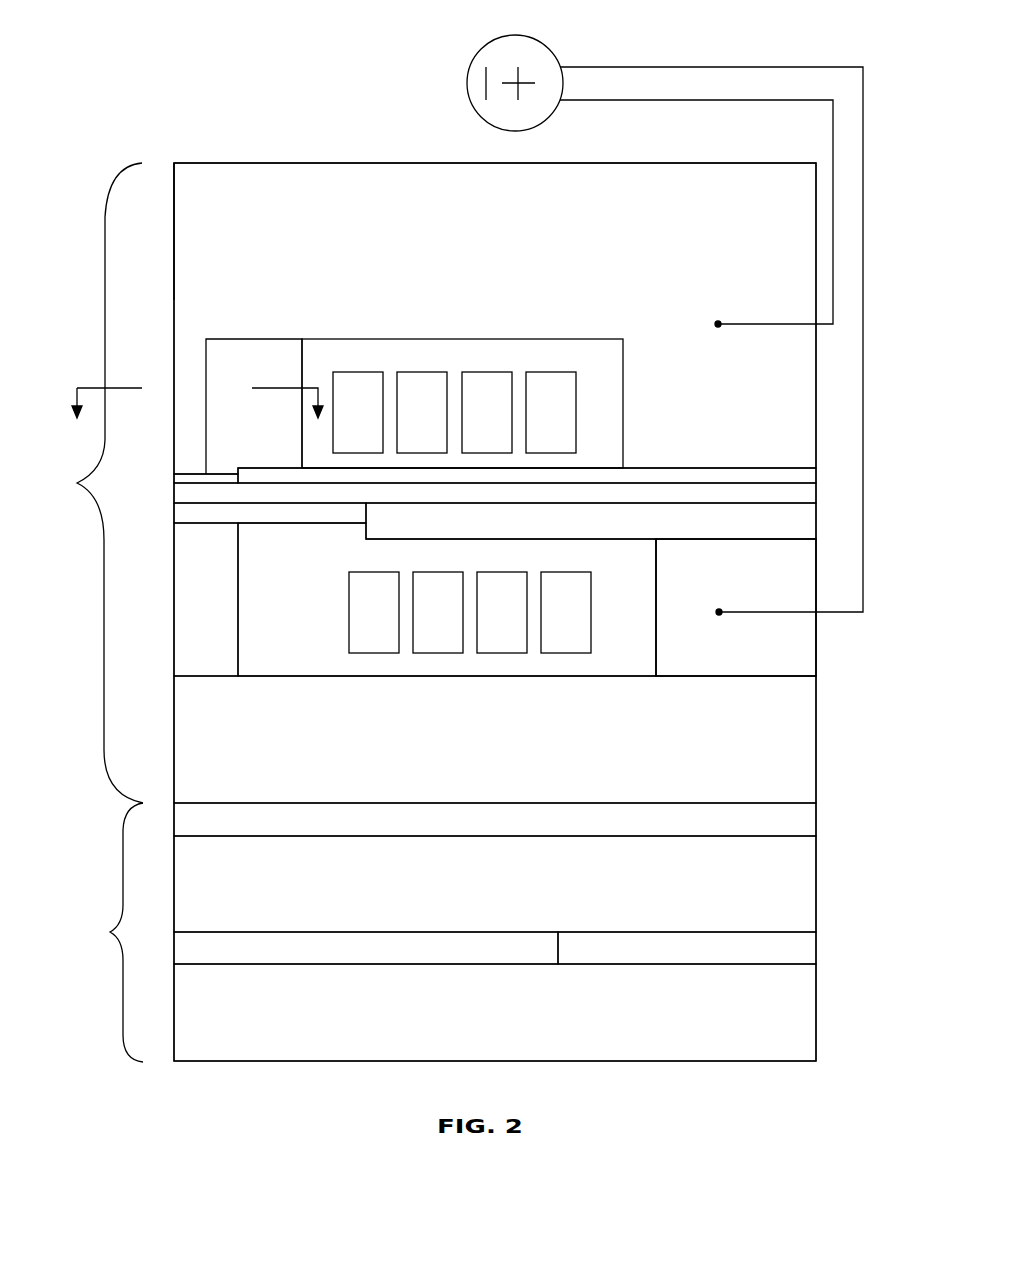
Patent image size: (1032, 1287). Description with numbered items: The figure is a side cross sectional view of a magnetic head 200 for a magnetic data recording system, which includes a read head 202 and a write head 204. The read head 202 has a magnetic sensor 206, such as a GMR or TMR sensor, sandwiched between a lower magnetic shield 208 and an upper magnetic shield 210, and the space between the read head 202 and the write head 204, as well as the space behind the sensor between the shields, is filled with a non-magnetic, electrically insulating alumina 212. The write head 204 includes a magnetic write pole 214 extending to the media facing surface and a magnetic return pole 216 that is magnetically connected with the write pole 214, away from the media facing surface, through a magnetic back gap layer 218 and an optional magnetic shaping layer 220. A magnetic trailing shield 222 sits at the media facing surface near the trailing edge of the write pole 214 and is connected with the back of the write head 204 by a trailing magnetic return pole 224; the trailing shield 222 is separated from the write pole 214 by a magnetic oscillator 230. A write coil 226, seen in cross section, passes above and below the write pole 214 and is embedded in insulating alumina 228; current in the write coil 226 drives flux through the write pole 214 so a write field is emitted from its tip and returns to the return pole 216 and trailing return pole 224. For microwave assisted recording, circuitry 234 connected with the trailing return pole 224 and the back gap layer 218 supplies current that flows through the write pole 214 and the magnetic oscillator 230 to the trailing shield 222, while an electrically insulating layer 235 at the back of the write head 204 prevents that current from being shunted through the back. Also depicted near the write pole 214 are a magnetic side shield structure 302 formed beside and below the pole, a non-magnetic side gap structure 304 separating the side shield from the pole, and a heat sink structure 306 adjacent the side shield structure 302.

The magnetic head 200 is at (329, 150).
The read head 202 is at (125, 830).
The write head 204 is at (118, 178).
The magnetic sensor 206 is at (327, 948).
The lower magnetic shield 208 is at (405, 1011).
The upper magnetic shield 210 is at (402, 885).
The alumina 212 is at (410, 819).
The magnetic write pole 214 is at (181, 494).
The magnetic return pole 216 is at (404, 741).
The magnetic back gap layer 218 is at (749, 645).
The magnetic shaping layer 220 is at (635, 517).
The magnetic trailing shield 222 is at (190, 372).
The trailing magnetic return pole 224 is at (468, 246).
The write coil 226 is at (569, 588).
The alumina 228 is at (583, 348).
The magnetic oscillator 230 is at (197, 479).
The circuitry 234 is at (547, 43).
The electrically insulating layer 235 is at (687, 475).
The magnetic side shield structure 302 is at (190, 541).
The non-magnetic side gap structure 304 is at (186, 513).
The heat sink structure 306 is at (238, 355).